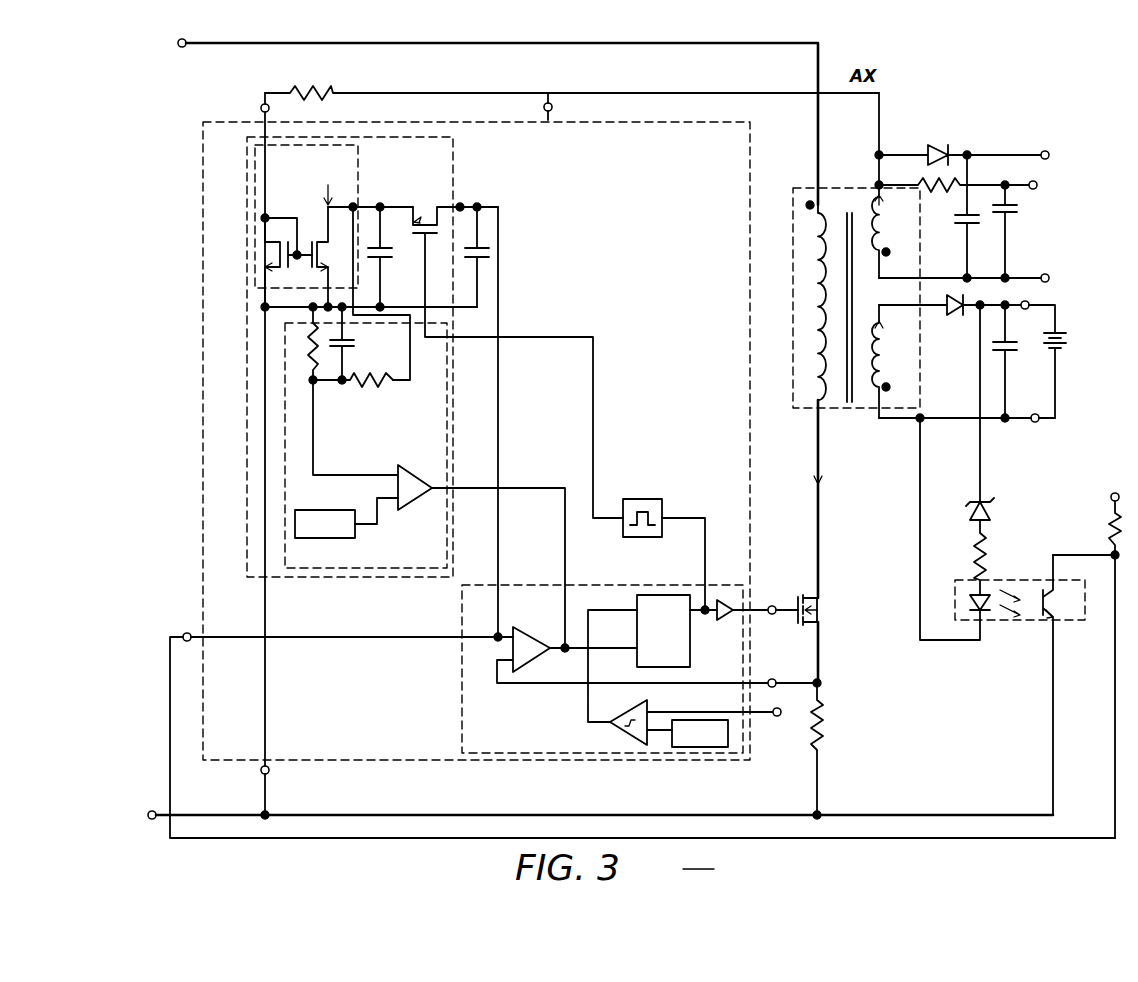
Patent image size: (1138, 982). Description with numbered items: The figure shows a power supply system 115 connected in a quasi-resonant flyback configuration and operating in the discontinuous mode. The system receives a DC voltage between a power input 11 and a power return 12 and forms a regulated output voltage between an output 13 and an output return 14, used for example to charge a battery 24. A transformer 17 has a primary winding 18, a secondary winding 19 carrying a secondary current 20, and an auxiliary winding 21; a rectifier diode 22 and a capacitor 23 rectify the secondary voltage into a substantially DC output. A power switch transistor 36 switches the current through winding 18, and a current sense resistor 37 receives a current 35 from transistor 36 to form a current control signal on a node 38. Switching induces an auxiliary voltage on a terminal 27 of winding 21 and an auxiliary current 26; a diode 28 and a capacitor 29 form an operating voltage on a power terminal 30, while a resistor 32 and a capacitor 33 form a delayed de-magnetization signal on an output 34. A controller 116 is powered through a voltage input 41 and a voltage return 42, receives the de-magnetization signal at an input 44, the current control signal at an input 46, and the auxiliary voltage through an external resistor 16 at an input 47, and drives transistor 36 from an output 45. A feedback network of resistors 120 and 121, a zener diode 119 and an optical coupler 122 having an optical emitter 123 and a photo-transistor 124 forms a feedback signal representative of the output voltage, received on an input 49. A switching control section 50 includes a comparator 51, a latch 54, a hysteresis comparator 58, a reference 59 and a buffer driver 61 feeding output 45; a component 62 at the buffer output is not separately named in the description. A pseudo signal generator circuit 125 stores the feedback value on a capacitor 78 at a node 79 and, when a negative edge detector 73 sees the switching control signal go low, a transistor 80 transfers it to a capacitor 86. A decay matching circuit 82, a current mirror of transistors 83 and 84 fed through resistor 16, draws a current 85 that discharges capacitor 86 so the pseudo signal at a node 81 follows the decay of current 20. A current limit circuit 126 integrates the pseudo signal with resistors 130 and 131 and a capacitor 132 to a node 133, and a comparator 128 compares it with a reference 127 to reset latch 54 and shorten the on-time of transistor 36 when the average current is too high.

The power input 11 is at (178, 45).
The power return 12 is at (150, 811).
The output 13 is at (1028, 303).
The output return 14 is at (1032, 414).
The external resistor 16 is at (340, 90).
The transformer 17 is at (858, 408).
The primary side winding 18 is at (815, 350).
The secondary side winding 19 is at (900, 394).
The secondary current 20 is at (882, 325).
The auxiliary winding 21 is at (900, 260).
The rectifier diode 22 is at (953, 312).
The capacitor 23 is at (1010, 348).
The battery 24 is at (1062, 338).
The auxiliary current 26 is at (882, 200).
The terminal 27 is at (865, 141).
The diode 28 is at (938, 148).
The capacitor 29 is at (970, 225).
The power terminal 30 is at (1048, 152).
The resistor 32 is at (945, 188).
The capacitor 33 is at (1010, 214).
The output 34 is at (1035, 190).
The current 35 is at (820, 480).
The power switch 36 is at (821, 612).
The current sense resistor 37 is at (822, 735).
The node 38 is at (821, 680).
The voltage input 41 is at (552, 105).
The voltage return 42 is at (269, 772).
The Dmag input 44 is at (780, 715).
The output 45 is at (774, 606).
The current control input 46 is at (774, 686).
The sense input 47 is at (260, 107).
The FB input 49 is at (185, 633).
The switching control section 50 is at (462, 690).
The comparator 51 is at (533, 633).
The switching control latch 54 is at (690, 650).
The hysteresis comparator 58 is at (620, 728).
The reference voltage generator 59 is at (700, 748).
The buffer driver 61 is at (742, 612).
The buffer 62 is at (708, 605).
The negative edge detector 73 is at (648, 499).
The capacitor 78 is at (489, 252).
The node 79 is at (462, 205).
The transistor 80 is at (425, 222).
The node 81 is at (382, 205).
The decay matching circuit 82 is at (358, 182).
The transistor 83 is at (262, 255).
The transistor 84 is at (320, 267).
The current 85 is at (330, 185).
The capacitor 86 is at (383, 258).
The power supply system 115 is at (701, 860).
The controller 116 is at (390, 760).
The zener diode 119 is at (992, 512).
The resistor 120 is at (985, 550).
The resistor 121 is at (1112, 528).
The optical coupler 122 is at (1008, 622).
The optical emitter 123 is at (968, 600).
The photo-transistor 124 is at (1070, 600).
The pseudo signal generator circuit 125 is at (333, 577).
The current limit circuit 126 is at (447, 385).
The reference generator 127 is at (338, 538).
The comparator 128 is at (438, 455).
The resistor 130 is at (311, 345).
The resistor 131 is at (372, 382).
The capacitor 132 is at (355, 343).
The node 133 is at (342, 384).